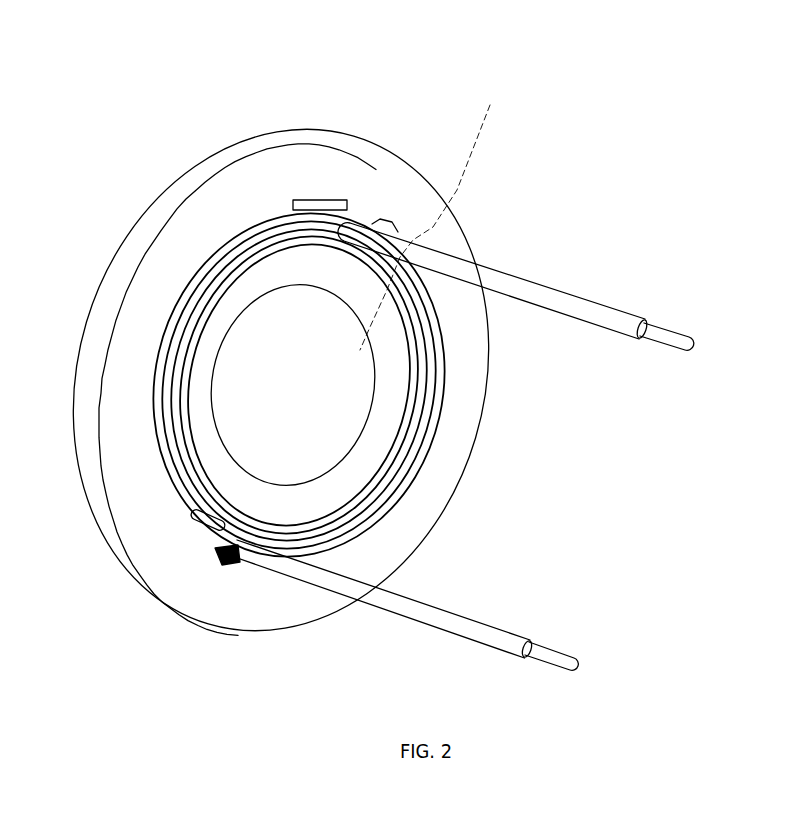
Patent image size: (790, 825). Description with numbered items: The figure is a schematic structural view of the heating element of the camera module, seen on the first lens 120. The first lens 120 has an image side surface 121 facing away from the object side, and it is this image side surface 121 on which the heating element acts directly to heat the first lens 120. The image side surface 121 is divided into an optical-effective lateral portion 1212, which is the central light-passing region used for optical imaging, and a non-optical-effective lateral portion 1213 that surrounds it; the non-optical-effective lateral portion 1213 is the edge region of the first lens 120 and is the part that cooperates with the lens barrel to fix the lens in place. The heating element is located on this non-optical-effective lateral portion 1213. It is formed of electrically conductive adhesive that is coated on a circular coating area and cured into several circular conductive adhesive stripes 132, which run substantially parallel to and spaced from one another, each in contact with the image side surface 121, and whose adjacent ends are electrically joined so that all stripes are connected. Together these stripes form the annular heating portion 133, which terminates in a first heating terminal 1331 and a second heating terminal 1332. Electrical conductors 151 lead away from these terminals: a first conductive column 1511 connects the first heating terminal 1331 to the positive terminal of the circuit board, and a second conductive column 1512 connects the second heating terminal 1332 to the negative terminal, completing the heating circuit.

The first lens 120 is at (110, 243).
The image side surface 121 is at (444, 183).
The optical-effective lateral portion 1212 is at (428, 66).
The non-optical-effective lateral portion 1213 is at (370, 197).
The conductive adhesive stripes 132 is at (298, 215).
The annular heating portion 133 is at (299, 368).
The first heating terminal 1331 is at (223, 553).
The second heating terminal 1332 is at (355, 207).
The electrical conductors 151 is at (466, 447).
The first conductive column 1511 is at (423, 607).
The second conductive column 1512 is at (525, 300).